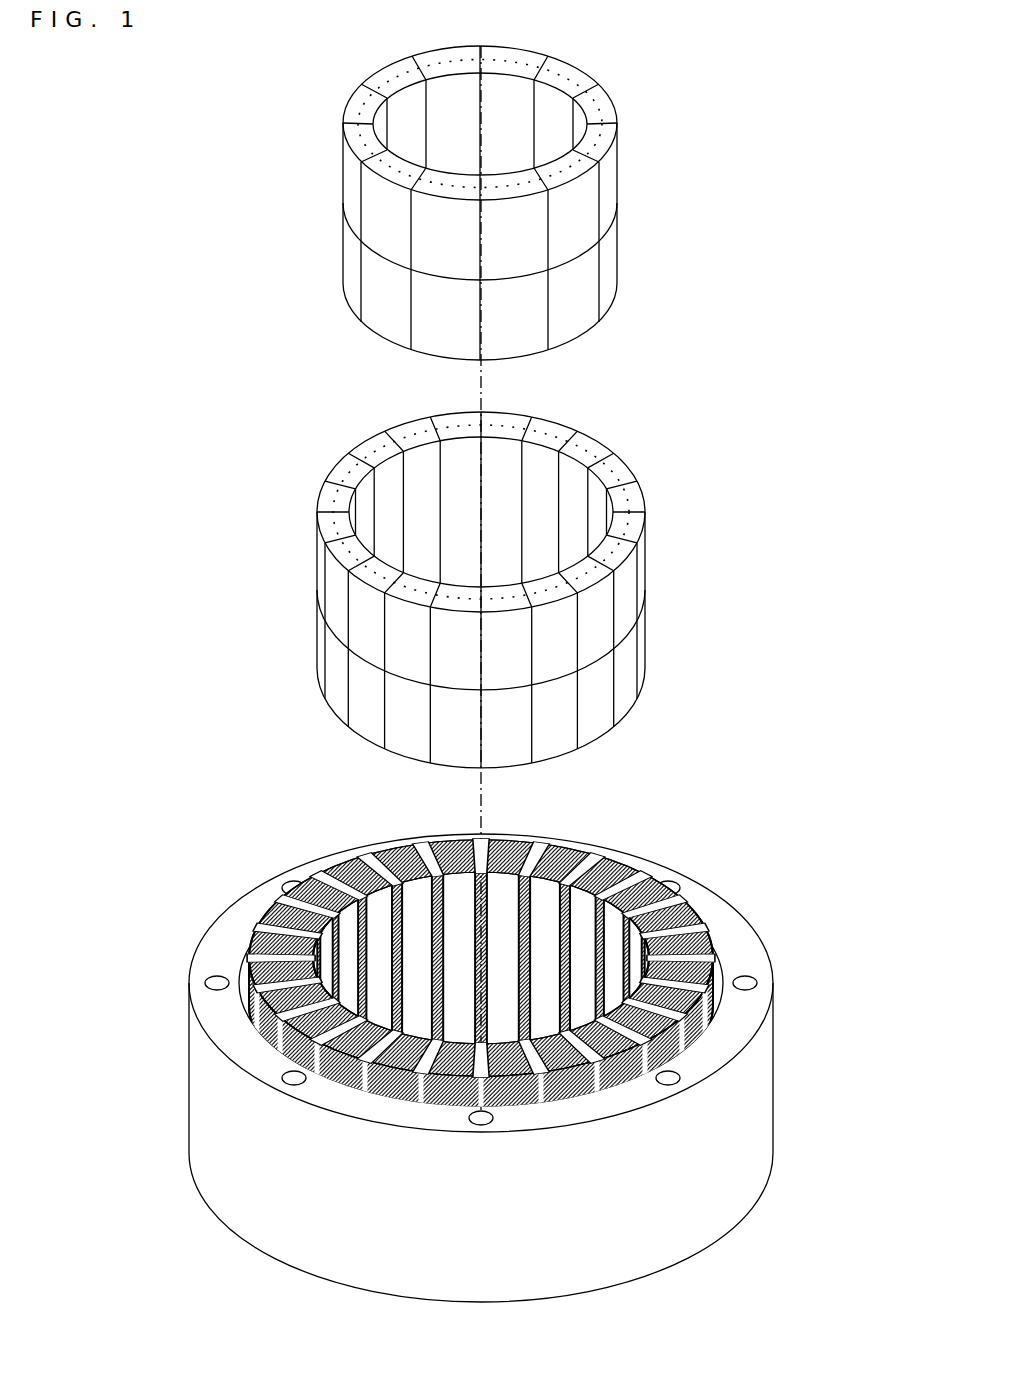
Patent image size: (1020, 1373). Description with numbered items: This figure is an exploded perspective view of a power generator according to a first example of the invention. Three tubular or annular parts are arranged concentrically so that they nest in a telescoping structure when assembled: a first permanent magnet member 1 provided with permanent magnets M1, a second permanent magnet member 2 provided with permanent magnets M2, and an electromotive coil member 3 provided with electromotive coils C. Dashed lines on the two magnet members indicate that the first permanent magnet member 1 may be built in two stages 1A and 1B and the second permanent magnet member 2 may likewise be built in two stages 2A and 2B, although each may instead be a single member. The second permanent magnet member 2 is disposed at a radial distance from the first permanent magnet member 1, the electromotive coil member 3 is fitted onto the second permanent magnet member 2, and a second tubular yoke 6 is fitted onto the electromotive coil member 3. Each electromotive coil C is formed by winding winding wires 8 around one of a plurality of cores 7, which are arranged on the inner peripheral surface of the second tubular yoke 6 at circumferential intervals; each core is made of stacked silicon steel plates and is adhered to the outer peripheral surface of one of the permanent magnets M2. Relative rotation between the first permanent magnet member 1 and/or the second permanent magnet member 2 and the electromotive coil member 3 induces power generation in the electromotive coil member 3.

The first permanent magnet member 1 is at (485, 194).
The stage of first permanent magnet member 1A is at (370, 207).
The stage of first permanent magnet member 1B is at (372, 290).
The permanent magnets M1 is at (560, 57).
The second permanent magnet member 2 is at (487, 580).
The stage of second permanent magnet member 2A is at (337, 590).
The stage of second permanent magnet member 2B is at (440, 679).
The permanent magnets M2 is at (574, 426).
The electromotive coil member 3 is at (476, 952).
The second tubular yoke 6 is at (747, 1013).
The cores 7 is at (405, 855).
The winding wires 8 is at (387, 863).
The electromotive coils C is at (510, 855).